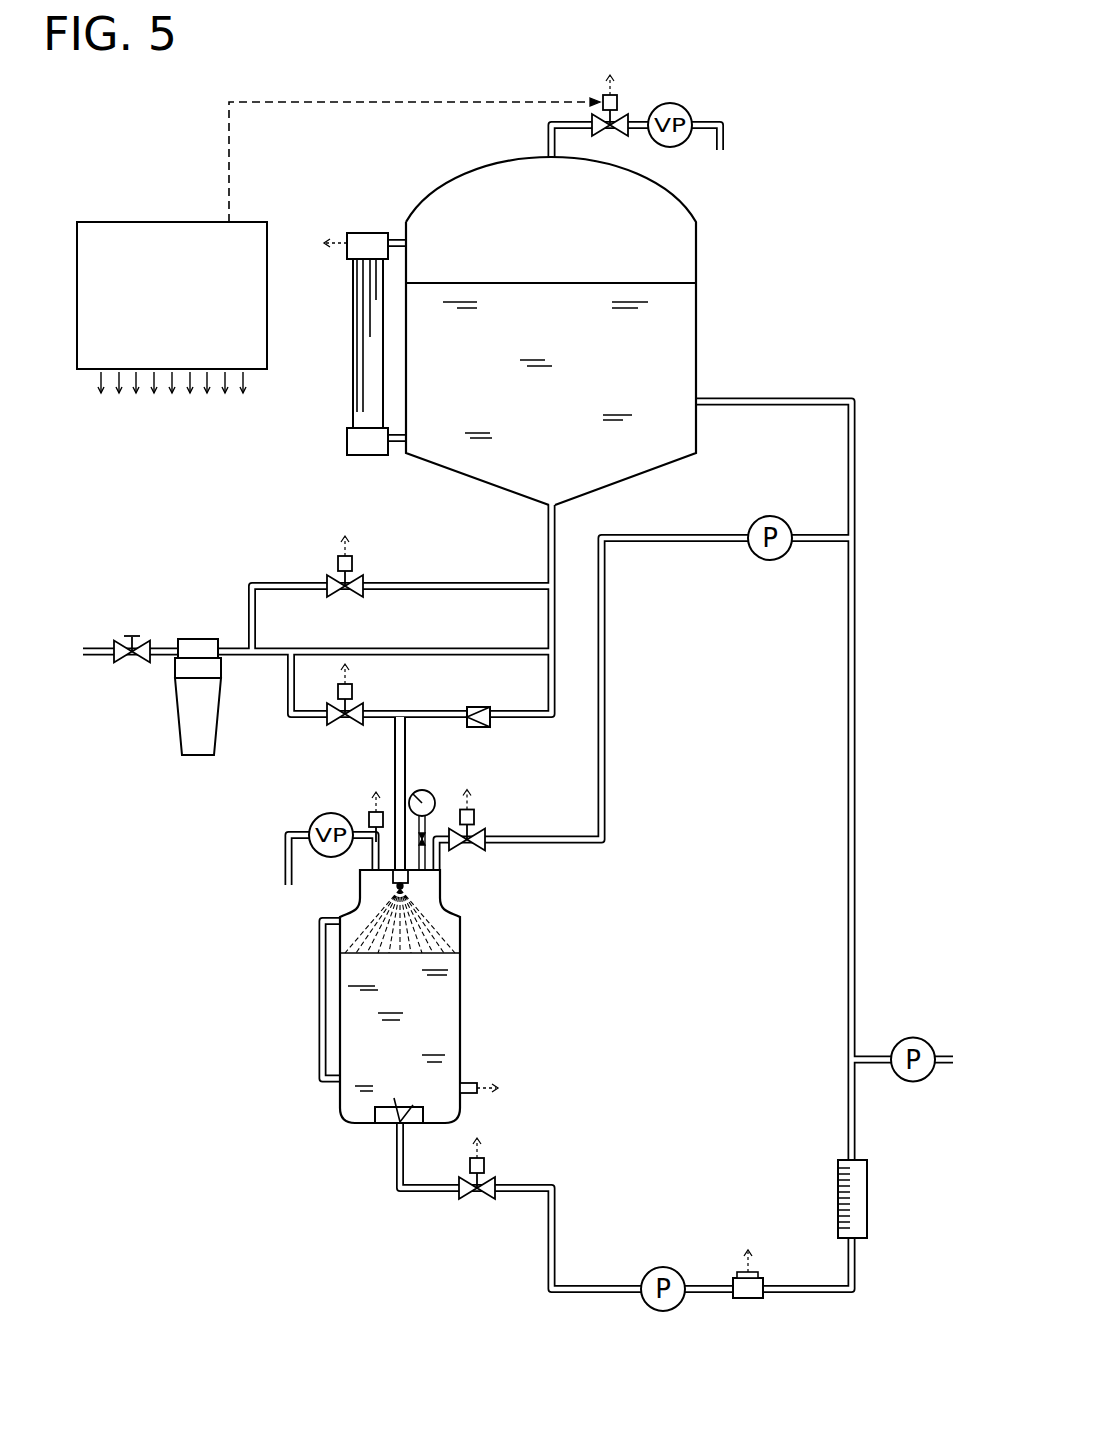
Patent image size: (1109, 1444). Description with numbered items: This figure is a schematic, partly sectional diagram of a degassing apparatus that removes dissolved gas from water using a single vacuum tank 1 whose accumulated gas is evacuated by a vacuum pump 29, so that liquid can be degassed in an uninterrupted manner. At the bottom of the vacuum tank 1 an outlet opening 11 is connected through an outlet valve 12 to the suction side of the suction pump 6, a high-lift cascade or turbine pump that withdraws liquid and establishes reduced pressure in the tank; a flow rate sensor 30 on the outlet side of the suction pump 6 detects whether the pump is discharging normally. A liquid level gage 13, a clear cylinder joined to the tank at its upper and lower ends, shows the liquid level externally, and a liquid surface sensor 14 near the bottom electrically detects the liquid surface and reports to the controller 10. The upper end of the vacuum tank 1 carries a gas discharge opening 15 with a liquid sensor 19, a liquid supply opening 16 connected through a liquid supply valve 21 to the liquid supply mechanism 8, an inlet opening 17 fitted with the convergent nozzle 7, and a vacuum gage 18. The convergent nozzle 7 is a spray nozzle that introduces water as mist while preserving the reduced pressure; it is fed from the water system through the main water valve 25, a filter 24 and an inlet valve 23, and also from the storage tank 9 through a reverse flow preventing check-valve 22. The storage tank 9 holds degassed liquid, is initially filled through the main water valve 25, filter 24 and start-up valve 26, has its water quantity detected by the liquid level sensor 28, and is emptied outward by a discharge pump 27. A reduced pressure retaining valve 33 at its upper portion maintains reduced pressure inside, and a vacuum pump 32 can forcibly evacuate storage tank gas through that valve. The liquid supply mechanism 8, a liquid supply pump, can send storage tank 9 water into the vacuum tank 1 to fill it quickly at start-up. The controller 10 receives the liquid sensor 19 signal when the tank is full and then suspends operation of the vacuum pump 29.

The vacuum tank 1 is at (369, 1056).
The suction pump 6 is at (650, 1310).
The convergent nozzle 7 is at (383, 957).
The liquid supply mechanism 8 is at (770, 514).
The storage tank 9 is at (697, 322).
The controller 10 is at (142, 220).
The outlet opening 11 is at (402, 1108).
The outlet valve 12 is at (478, 1200).
The liquid level gage 13 is at (318, 1012).
The liquid surface sensor 14 is at (477, 1095).
The gas discharge opening 15 is at (352, 893).
The liquid supply opening 16 is at (457, 878).
The inlet opening 17 is at (394, 865).
The vacuum gage 18 is at (413, 793).
The liquid sensor 19 is at (372, 812).
The liquid supply valve 21 is at (475, 852).
The check-valve 22 is at (475, 707).
The inlet valve 23 is at (338, 725).
The filter 24 is at (198, 638).
The main water valve 25 is at (128, 662).
The start-up valve 26 is at (352, 580).
The discharge pump 27 is at (913, 1036).
The liquid level sensor 28 is at (350, 377).
The vacuum pump 29 is at (310, 815).
The flow rate sensor 30 is at (745, 1298).
The vacuum pump 32 is at (688, 100).
The reduced pressure retaining valve 33 is at (620, 110).